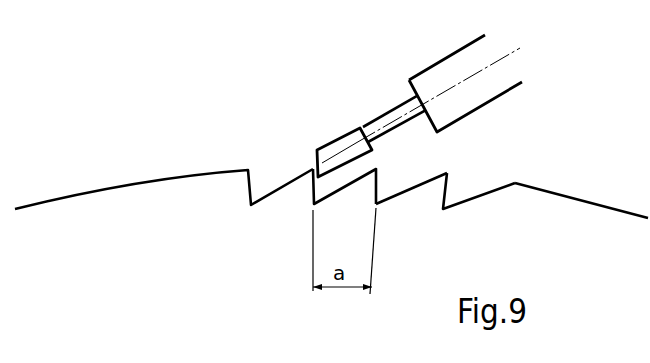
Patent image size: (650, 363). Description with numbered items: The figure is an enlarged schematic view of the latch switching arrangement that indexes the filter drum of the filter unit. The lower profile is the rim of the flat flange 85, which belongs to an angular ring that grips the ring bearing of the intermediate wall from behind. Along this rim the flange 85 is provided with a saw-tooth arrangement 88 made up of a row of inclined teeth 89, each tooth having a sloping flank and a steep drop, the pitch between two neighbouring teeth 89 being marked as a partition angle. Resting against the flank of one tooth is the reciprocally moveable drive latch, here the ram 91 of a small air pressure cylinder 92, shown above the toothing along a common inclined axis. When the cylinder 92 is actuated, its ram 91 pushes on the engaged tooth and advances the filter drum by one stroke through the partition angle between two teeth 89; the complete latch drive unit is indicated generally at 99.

The flat flange 85 is at (427, 252).
The saw-tooth arrangement 88 is at (457, 182).
The teeth 89 is at (343, 200).
The ram 91 is at (345, 138).
The small air pressure cylinder 92 is at (450, 63).
The cutting tool 99 is at (278, 102).